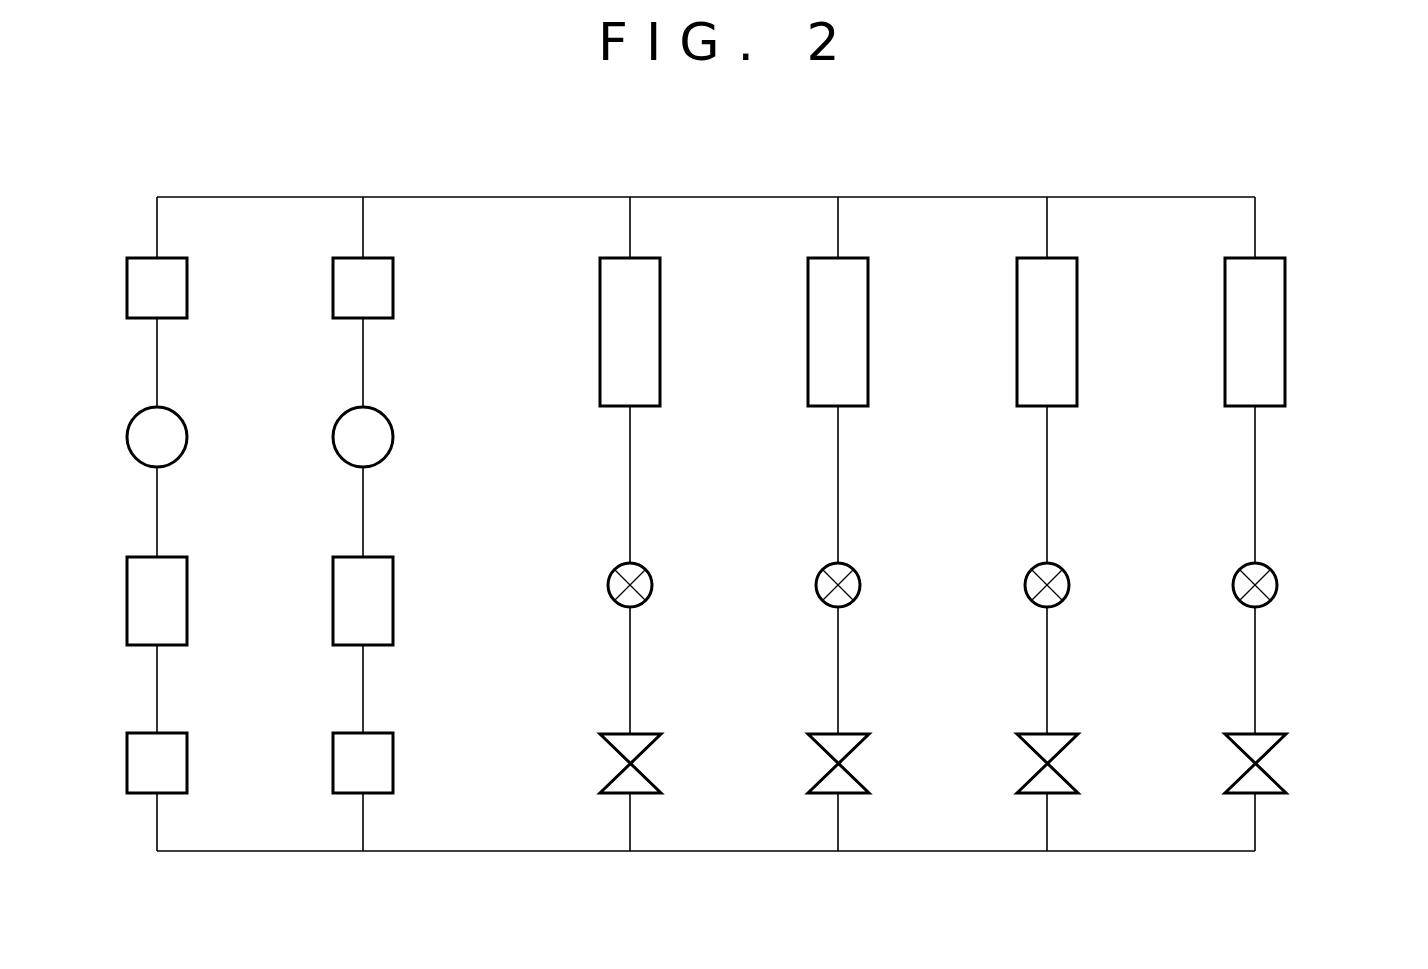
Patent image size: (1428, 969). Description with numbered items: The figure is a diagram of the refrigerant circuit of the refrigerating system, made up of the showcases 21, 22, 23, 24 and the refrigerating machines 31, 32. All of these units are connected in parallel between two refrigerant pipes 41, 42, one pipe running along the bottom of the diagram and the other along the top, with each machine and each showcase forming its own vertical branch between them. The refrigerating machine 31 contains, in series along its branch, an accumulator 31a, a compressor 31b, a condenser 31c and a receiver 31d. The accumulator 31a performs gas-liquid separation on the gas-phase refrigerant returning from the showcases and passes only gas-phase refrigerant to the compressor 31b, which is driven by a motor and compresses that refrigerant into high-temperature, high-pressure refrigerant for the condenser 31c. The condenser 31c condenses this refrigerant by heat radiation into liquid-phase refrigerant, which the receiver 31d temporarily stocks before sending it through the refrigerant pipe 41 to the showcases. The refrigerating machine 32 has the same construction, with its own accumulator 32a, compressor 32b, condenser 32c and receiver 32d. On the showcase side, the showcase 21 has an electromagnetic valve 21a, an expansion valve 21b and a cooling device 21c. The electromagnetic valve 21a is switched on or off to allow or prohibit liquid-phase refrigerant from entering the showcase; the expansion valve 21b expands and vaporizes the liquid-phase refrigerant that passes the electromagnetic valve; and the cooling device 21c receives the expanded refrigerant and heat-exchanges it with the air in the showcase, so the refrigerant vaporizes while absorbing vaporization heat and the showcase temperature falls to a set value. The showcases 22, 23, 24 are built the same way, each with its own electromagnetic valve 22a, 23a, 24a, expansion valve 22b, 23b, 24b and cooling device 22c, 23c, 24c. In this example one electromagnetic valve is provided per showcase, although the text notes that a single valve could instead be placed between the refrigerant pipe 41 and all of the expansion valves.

The showcase 21 is at (630, 183).
The showcase 22 is at (838, 183).
The showcase 23 is at (1047, 183).
The showcase 24 is at (1255, 183).
The electromagnetic valve 21a is at (648, 734).
The electromagnetic valve 22a is at (856, 734).
The electromagnetic valve 23a is at (1065, 734).
The electromagnetic valve 24a is at (1273, 734).
The expansion valve 21b is at (646, 573).
The expansion valve 22b is at (854, 573).
The expansion valve 23b is at (1063, 573).
The expansion valve 24b is at (1271, 573).
The cooling device 21c is at (661, 347).
The cooling device 22c is at (869, 347).
The cooling device 23c is at (1078, 347).
The cooling device 24c is at (1286, 347).
The refrigerating machine 31 is at (157, 183).
The refrigerating machine 32 is at (363, 183).
The accumulator 31a is at (187, 282).
The accumulator 32a is at (393, 282).
The compressor 31b is at (185, 425).
The compressor 32b is at (391, 425).
The condenser 31c is at (187, 580).
The condenser 32c is at (393, 580).
The receiver 31d is at (187, 756).
The receiver 32d is at (393, 756).
The refrigerant pipe 41 is at (450, 851).
The refrigerant pipe 42 is at (450, 197).